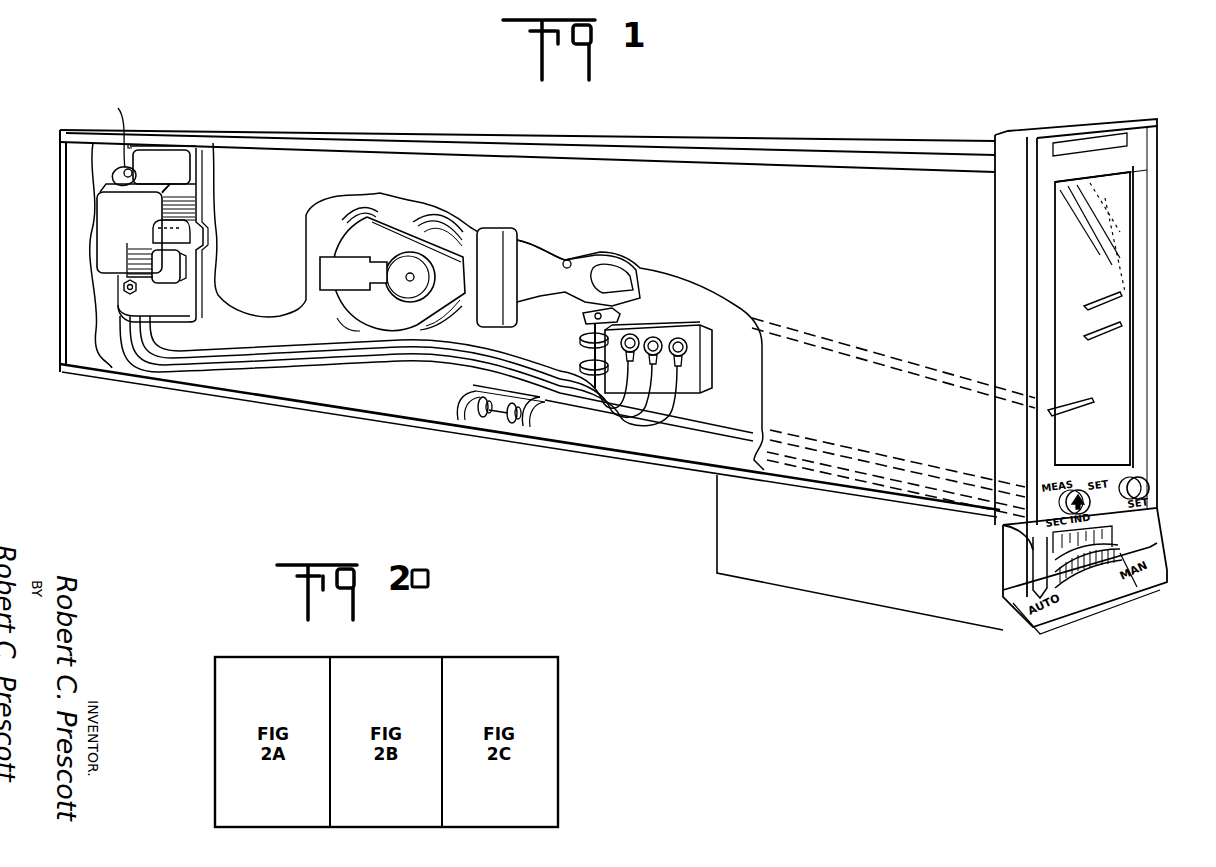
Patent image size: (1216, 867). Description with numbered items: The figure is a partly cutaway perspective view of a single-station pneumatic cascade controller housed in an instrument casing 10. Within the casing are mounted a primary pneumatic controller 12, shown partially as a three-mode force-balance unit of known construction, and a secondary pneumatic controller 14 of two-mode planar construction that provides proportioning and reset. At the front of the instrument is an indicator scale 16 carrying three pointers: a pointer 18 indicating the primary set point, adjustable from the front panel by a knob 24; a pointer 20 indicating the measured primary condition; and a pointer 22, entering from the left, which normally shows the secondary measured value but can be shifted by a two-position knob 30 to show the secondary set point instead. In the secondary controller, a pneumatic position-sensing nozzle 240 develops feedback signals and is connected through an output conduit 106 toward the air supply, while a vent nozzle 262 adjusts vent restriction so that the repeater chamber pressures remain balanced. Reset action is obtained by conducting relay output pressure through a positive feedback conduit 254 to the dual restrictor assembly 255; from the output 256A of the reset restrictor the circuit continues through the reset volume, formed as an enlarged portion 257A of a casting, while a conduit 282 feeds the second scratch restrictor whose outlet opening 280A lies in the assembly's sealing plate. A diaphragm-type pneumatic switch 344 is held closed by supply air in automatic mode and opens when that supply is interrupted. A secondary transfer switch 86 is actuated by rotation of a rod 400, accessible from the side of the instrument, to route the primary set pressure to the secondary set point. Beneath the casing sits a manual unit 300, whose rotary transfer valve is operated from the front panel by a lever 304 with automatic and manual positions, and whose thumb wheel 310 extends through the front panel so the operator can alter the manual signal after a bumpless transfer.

The instrument casing 10 is at (923, 100).
The primary pneumatic controller 12 is at (341, 226).
The secondary pneumatic controller 14 is at (205, 187).
The indicator scale 16 is at (1105, 213).
The pointer 18 is at (1100, 305).
The pointer 20 is at (1104, 340).
The pointer 22 is at (1078, 410).
The knob 24 is at (1142, 478).
The two-position knob 30 is at (1082, 490).
The secondary transfer switch 86 is at (582, 311).
The output conduit 106 is at (113, 178).
The pneumatic position-sensing nozzle 240 is at (134, 141).
The positive feedback conduit 254 is at (272, 350).
The dual restrictor assembly 255 is at (735, 354).
The output of reset restrictor 256A is at (682, 338).
The enlarged portion 257A is at (107, 217).
The vent nozzle 262 is at (124, 290).
The outlet opening 280A is at (633, 336).
The conduit 282 is at (280, 344).
The manual unit 300 is at (790, 590).
The lever 304 is at (1040, 563).
The thumb wheel 310 is at (1100, 575).
The pneumatic switch 344 is at (170, 268).
The rod 400 is at (584, 352).